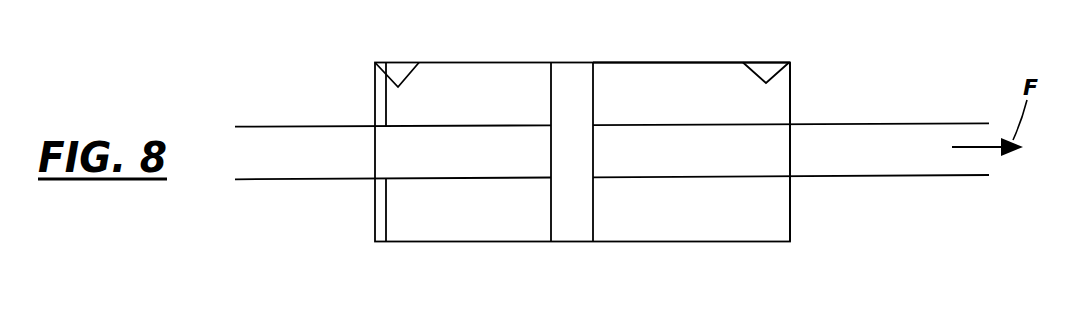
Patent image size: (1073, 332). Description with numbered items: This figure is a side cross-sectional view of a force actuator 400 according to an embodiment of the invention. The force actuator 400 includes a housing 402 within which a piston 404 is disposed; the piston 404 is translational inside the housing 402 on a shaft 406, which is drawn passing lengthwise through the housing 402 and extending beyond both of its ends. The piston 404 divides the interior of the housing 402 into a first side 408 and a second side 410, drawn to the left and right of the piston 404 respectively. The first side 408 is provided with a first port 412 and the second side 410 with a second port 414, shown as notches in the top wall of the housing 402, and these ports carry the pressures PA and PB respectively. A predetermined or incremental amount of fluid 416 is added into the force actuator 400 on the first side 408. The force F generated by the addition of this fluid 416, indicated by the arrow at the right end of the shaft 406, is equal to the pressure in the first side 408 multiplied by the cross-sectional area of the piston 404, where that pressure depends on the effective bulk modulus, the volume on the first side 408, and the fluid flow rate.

The force actuator 400 is at (891, 39).
The housing 402 is at (792, 101).
The piston 404 is at (594, 102).
The shaft 406 is at (902, 176).
The first side 408 is at (508, 84).
The second side 410 is at (686, 84).
The first port 412 is at (395, 68).
The second port 414 is at (766, 67).
The fluid 416 is at (388, 218).